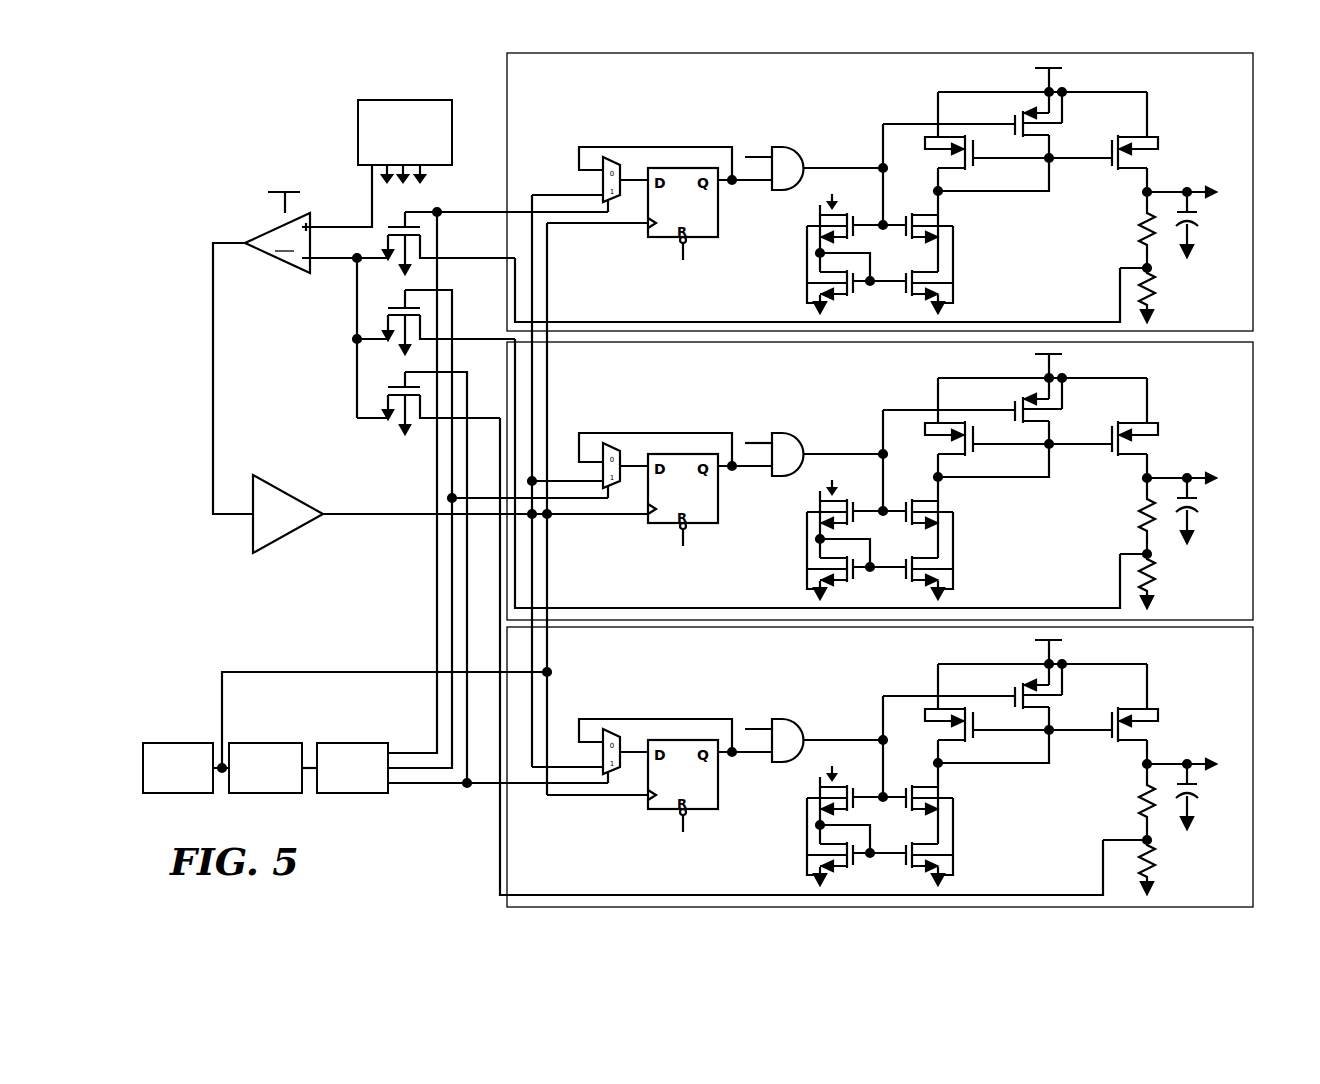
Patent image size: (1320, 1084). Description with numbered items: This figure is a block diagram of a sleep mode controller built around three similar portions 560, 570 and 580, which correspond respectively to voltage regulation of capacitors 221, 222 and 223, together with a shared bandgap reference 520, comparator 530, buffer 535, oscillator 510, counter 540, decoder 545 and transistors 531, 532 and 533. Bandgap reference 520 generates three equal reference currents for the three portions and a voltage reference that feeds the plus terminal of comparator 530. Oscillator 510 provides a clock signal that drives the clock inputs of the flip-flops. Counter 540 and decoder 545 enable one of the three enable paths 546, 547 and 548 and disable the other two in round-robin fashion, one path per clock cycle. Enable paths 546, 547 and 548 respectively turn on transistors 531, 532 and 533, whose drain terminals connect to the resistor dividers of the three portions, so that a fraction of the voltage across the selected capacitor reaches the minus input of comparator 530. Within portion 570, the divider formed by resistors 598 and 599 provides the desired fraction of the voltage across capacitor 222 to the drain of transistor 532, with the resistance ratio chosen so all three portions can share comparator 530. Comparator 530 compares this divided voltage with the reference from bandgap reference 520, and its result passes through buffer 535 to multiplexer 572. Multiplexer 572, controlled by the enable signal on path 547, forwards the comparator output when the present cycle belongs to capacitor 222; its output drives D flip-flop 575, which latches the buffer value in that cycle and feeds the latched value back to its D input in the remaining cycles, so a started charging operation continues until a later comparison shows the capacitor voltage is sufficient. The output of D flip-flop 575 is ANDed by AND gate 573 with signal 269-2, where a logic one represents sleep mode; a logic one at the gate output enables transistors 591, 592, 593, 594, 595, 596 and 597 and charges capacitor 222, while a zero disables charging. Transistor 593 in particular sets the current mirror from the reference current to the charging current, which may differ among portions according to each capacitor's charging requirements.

The oscillator 510 is at (198, 743).
The bandgap reference 520 is at (358, 133).
The comparator 530 is at (285, 272).
The transistor 531 is at (390, 261).
The transistor 532 is at (390, 342).
The transistor 533 is at (390, 421).
The buffer 535 is at (283, 536).
The counter 540 is at (292, 743).
The decoder 545 is at (378, 743).
The enable path 546 is at (422, 752).
The enable path 547 is at (405, 772).
The enable path 548 is at (443, 786).
The portion 560 is at (613, 302).
The portion 570 is at (615, 587).
The portion 580 is at (615, 667).
The multiplexer 572 is at (588, 465).
The AND gate 573 is at (790, 434).
The D flip-flop 575 is at (702, 502).
The path 269-2 is at (762, 443).
The transistor 591 is at (826, 560).
The transistor 592 is at (945, 563).
The transistor 593 is at (824, 503).
The transistor 594 is at (940, 502).
The transistor 595 is at (950, 450).
The transistor 596 is at (1040, 412).
The transistor 597 is at (1135, 449).
The resistor 598 is at (1140, 520).
The resistor 599 is at (1152, 567).
The capacitor 221 is at (1200, 219).
The capacitor 222 is at (1198, 505).
The capacitor 223 is at (1200, 789).